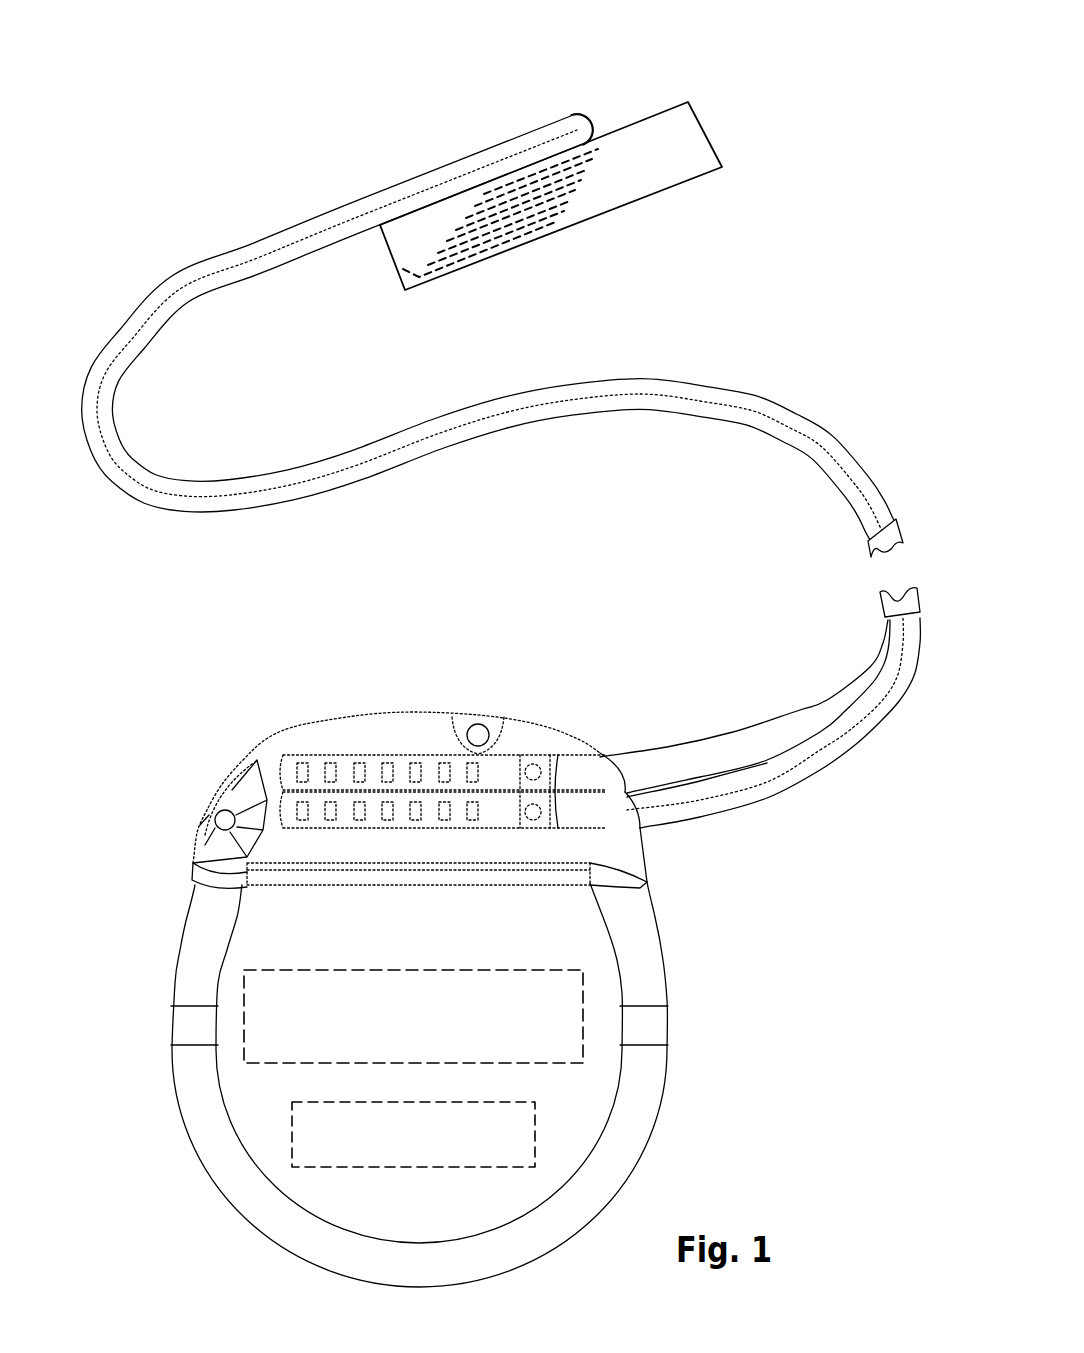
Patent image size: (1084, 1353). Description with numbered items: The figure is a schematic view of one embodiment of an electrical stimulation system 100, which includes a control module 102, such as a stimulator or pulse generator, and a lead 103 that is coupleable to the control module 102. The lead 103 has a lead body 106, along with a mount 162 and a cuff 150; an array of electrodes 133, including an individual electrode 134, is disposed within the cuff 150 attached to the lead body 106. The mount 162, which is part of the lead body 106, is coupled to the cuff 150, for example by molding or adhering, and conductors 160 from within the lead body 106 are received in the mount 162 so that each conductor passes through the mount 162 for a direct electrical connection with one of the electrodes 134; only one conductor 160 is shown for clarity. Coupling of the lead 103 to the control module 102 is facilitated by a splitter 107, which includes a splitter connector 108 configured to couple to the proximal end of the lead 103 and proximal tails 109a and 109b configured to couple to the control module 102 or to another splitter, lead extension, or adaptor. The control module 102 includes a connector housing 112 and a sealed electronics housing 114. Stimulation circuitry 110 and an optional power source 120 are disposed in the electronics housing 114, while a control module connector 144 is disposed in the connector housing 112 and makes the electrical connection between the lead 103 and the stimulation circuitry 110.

The electrical stimulation system 100 is at (205, 95).
The control module 102 is at (118, 733).
The lead 103 is at (132, 228).
The lead body 106 is at (697, 390).
The splitter 107 is at (775, 628).
The splitter connector 108 is at (866, 562).
The proximal tail 109a is at (756, 736).
The proximal tail 109b is at (845, 738).
The stimulation circuitry 110 is at (265, 1022).
The connector housing 112 is at (218, 750).
The electronics housing 114 is at (130, 945).
The power source 120 is at (310, 1138).
The array of electrodes 133 is at (417, 318).
The electrode 134 is at (403, 269).
The control module connector 144 is at (348, 752).
The cuff 150 is at (706, 116).
The conductor 160 is at (586, 397).
The mount 162 is at (592, 120).